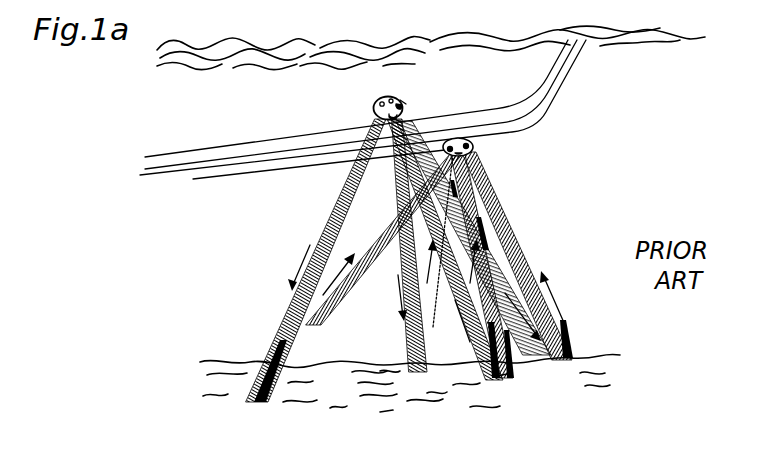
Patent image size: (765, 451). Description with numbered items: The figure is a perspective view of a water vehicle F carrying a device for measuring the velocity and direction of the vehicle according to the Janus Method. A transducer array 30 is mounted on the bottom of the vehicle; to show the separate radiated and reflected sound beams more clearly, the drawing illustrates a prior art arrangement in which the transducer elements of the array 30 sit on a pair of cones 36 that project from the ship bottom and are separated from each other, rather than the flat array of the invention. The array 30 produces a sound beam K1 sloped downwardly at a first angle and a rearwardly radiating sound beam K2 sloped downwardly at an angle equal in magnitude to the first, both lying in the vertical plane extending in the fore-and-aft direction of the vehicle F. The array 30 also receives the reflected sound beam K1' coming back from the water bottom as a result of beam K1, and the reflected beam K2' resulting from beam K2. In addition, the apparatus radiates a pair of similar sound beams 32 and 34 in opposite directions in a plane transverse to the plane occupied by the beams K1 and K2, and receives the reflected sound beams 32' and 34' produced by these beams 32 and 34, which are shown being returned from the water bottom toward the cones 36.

The transducer array 30 is at (374, 106).
The cones 36 is at (402, 101).
The water vehicle F is at (527, 52).
The rearwardly radiating sound beam K2 is at (309, 260).
The reflected sound beam K2' is at (385, 238).
The sound beam 32 is at (389, 245).
The reflected sound beam 32' is at (457, 255).
The sound beam 34 is at (445, 285).
The reflected sound beam 34' is at (506, 299).
The sound beam K1 is at (479, 258).
The reflected sound beam K1' is at (523, 256).